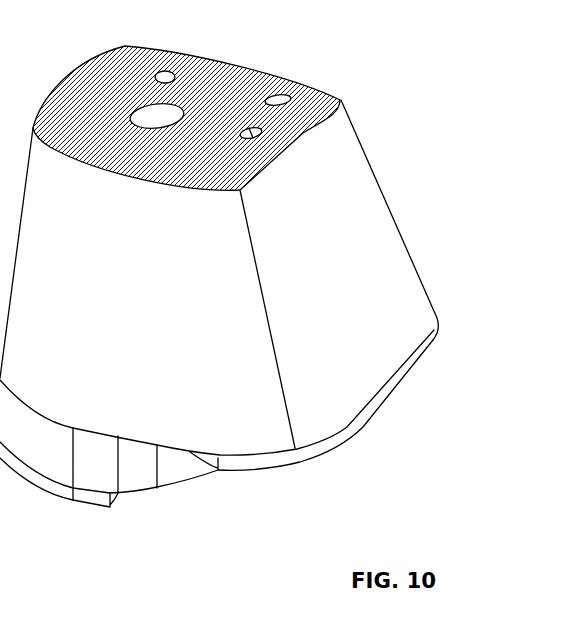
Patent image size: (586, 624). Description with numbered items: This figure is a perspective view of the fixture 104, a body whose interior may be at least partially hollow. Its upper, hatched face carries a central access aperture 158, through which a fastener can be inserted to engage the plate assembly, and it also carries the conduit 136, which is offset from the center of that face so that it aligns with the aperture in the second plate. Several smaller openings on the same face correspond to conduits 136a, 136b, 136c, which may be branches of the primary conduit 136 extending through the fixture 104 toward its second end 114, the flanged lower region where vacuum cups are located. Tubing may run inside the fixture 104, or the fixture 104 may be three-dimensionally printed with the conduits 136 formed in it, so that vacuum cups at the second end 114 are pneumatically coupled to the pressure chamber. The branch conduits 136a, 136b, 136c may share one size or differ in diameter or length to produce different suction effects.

The fixture 104 is at (268, 297).
The second end 114 is at (202, 508).
The access aperture 158 is at (141, 96).
The conduit 136 is at (318, 77).
The conduit 136a is at (170, 58).
The conduit 136b is at (292, 86).
The conduit 136c is at (270, 128).